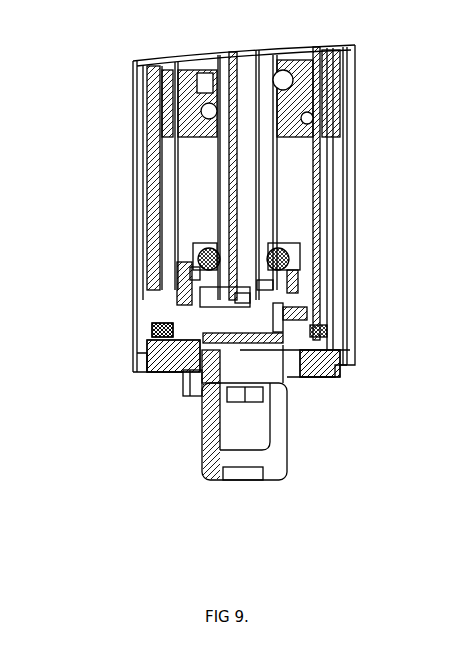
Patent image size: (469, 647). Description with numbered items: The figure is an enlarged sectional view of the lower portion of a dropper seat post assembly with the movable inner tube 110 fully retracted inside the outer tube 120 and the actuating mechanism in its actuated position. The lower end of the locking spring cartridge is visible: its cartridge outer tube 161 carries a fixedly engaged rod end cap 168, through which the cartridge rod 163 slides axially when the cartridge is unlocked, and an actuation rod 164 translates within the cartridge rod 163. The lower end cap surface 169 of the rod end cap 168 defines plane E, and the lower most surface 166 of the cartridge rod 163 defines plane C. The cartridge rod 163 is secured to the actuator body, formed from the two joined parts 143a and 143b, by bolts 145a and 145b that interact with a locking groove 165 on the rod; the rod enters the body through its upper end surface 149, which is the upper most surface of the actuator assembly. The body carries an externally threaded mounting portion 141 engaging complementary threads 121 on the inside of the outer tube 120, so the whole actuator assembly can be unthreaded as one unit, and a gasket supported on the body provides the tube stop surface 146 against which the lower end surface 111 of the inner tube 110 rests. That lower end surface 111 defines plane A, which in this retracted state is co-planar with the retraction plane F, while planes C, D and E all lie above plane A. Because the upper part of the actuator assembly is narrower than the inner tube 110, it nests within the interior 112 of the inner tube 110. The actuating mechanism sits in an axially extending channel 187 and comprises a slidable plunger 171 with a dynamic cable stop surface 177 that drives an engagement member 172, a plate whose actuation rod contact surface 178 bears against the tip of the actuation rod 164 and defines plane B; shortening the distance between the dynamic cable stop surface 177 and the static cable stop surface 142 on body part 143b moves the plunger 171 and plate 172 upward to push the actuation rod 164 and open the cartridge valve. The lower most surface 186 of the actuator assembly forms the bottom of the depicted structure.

The inner tube 110 is at (335, 185).
The outer tube 120 is at (398, 241).
The upper end surface 149 is at (345, 230).
The interior 112 is at (178, 268).
The cartridge rod 163 is at (220, 97).
The actuation rod 164 is at (247, 107).
The lower end cap surface 169 is at (193, 137).
The rod end cap 168 is at (297, 97).
The bolt 145a is at (200, 258).
The bolt 145b is at (220, 242).
The locking groove 165 is at (275, 255).
The cartridge outer tube 161 is at (270, 265).
The actuator body part 143a is at (190, 243).
The actuation rod contact surface 178 is at (220, 333).
The lower end surface 111 is at (180, 323).
The tube stop surface 146 is at (180, 323).
The complementary threads 121 is at (147, 355).
The mounting portion 141 is at (147, 355).
The actuator body part 143b is at (170, 373).
The engagement member 172 is at (215, 370).
The plunger 171 is at (203, 468).
The lower most surface 186 is at (272, 482).
The dynamic cable stop surface 177 is at (250, 467).
The static cable stop surface 142 is at (247, 403).
The channel 187 is at (268, 325).
The lower most surface 166 is at (265, 298).
The plane E is at (313, 135).
The plane D is at (300, 244).
The plane C is at (277, 293).
The plane A is at (310, 325).
The retraction plane F is at (440, 298).
The plane B is at (340, 336).